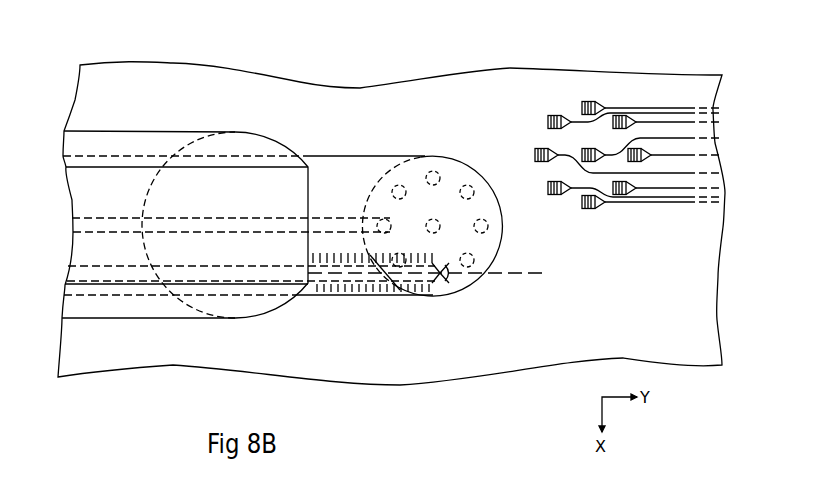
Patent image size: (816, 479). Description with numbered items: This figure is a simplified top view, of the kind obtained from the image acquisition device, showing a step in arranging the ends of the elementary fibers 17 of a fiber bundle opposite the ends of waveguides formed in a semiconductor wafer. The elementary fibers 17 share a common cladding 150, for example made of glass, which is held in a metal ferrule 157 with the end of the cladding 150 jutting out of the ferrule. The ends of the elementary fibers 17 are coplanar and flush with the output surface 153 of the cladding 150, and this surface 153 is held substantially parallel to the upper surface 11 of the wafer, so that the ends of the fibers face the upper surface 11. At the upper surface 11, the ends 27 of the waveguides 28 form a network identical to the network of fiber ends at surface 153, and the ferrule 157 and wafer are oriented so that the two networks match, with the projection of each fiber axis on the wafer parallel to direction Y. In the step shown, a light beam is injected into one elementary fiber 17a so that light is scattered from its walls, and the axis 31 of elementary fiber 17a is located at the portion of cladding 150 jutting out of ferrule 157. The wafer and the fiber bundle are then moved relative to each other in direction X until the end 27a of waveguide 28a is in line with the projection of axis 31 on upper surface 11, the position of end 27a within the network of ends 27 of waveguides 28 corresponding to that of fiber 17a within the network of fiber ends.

The upper surface 11 is at (460, 83).
The metal ferrule 157 is at (122, 143).
The elementary fibers 17 is at (83, 226).
The cladding 150 is at (378, 162).
The output surface 153 is at (472, 165).
The elementary fiber 17a is at (350, 278).
The axis 31 is at (518, 277).
The ends of waveguides 27 is at (587, 101).
The waveguides 28 is at (647, 108).
The end of waveguide 27a is at (588, 210).
The waveguide 28a is at (665, 203).